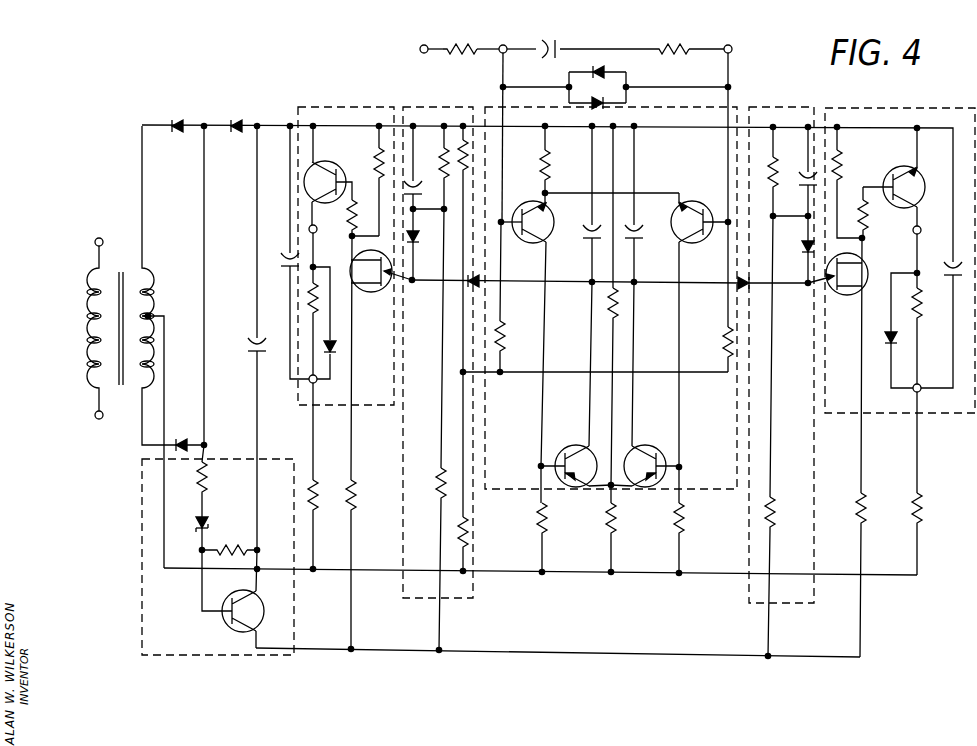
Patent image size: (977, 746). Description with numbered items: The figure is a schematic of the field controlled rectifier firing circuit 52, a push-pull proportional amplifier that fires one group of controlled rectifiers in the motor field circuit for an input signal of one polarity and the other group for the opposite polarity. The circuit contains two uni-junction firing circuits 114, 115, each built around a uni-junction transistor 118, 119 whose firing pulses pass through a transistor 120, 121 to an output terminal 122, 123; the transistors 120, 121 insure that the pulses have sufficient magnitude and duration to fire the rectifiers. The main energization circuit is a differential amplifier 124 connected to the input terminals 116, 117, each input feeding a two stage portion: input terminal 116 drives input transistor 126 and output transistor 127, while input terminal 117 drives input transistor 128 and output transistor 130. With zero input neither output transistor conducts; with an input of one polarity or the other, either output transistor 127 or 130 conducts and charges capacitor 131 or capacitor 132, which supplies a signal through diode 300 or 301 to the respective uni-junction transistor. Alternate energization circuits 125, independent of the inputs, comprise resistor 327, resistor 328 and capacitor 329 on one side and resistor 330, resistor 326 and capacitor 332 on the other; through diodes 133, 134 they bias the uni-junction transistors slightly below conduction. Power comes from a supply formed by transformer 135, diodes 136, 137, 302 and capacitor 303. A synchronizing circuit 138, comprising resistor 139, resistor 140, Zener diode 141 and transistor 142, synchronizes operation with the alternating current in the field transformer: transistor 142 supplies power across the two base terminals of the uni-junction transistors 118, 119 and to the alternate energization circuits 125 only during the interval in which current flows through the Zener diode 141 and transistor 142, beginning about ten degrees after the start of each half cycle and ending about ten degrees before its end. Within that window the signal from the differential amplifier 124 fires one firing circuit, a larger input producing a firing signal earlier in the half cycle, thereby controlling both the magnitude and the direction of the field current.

The field controlled rectifier firing circuit 52 is at (863, 614).
The uni-junction firing circuit 114 is at (935, 414).
The uni-junction firing circuit 115 is at (297, 405).
The input terminal 116 is at (506, 46).
The input terminal 117 is at (733, 51).
The uni-junction transistor 118 is at (864, 267).
The uni-junction transistor 119 is at (365, 292).
The transistor 120 is at (891, 175).
The transistor 121 is at (333, 166).
The output terminal 122 is at (912, 229).
The output terminal 123 is at (309, 229).
The differential amplifier 124 is at (530, 491).
The alternate energization circuit 125 is at (455, 599).
The input transistor 126 is at (533, 243).
The output transistor 127 is at (570, 446).
The input transistor 128 is at (697, 200).
The output transistor 130 is at (652, 446).
The capacitor 131 is at (589, 251).
The capacitor 132 is at (636, 251).
The diode 133 is at (806, 251).
The diode 134 is at (414, 244).
The transformer 135 is at (116, 246).
The diode 136 is at (177, 120).
The diode 137 is at (179, 438).
The synchronizing circuit 138 is at (142, 488).
The resistor 139 is at (206, 482).
The resistor 140 is at (230, 556).
The Zener diode 141 is at (204, 526).
The transistor 142 is at (223, 624).
The diode 300 is at (741, 290).
The diode 301 is at (478, 284).
The diode 302 is at (239, 120).
The capacitor 303 is at (256, 341).
The resistor 326 is at (437, 496).
The resistor 327 is at (773, 166).
The resistor 328 is at (790, 484).
The capacitor 329 is at (808, 192).
The resistor 330 is at (448, 172).
The capacitor 332 is at (416, 183).